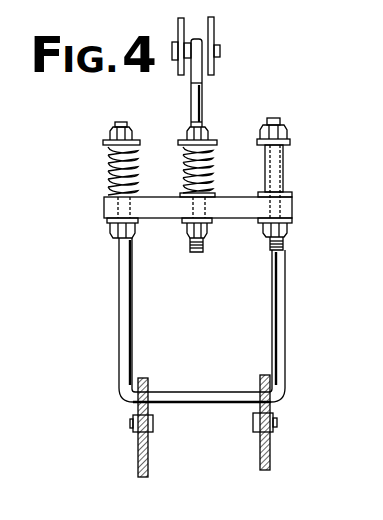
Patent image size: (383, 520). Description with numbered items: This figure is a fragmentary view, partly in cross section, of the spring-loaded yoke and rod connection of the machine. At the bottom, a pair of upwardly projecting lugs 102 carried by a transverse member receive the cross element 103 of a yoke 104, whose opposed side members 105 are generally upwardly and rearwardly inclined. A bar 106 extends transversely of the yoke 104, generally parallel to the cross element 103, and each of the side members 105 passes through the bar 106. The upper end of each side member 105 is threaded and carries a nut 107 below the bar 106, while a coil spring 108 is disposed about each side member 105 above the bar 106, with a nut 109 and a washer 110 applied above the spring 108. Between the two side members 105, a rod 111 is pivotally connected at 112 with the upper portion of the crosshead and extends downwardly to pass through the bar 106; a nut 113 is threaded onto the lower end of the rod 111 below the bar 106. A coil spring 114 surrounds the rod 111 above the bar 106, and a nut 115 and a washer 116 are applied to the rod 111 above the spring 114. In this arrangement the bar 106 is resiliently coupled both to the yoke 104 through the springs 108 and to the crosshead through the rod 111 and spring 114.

The lugs 102 is at (137, 410).
The cross element 103 is at (193, 403).
The yoke 104 is at (287, 320).
The side members 105 is at (122, 322).
The bar 106 is at (180, 218).
The nut 107 is at (288, 228).
The coil spring 108 is at (108, 177).
The nut 109 is at (110, 133).
The washer 110 is at (102, 142).
The rod 111 is at (202, 98).
The pivotal connection 112 is at (220, 50).
The nut 113 is at (213, 243).
The coil spring 114 is at (210, 173).
The nut 115 is at (207, 126).
The washer 116 is at (210, 139).